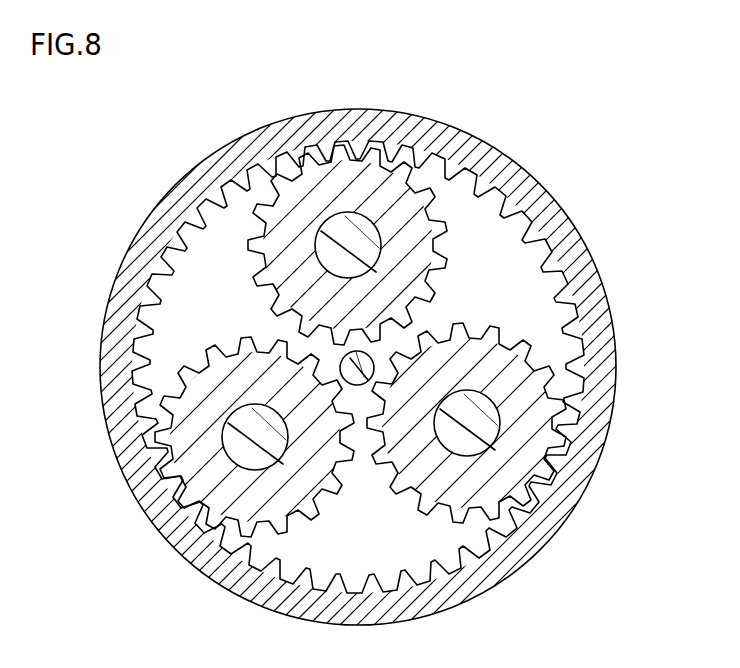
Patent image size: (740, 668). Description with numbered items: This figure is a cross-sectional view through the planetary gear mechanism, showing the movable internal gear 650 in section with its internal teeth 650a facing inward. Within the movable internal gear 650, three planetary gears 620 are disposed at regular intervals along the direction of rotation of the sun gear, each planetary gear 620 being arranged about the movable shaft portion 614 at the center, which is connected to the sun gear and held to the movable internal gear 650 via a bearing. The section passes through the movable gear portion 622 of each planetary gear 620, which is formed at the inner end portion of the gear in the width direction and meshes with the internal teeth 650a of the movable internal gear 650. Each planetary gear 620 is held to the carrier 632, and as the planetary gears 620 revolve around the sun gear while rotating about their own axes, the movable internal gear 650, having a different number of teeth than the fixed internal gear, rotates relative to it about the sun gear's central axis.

The movable shaft portion 614 is at (370, 357).
The planetary gear 620 is at (320, 205).
The movable gear portion 622 is at (320, 226).
The carrier 632 is at (348, 172).
The movable internal gear 650 is at (520, 180).
The internal teeth 650a is at (468, 203).